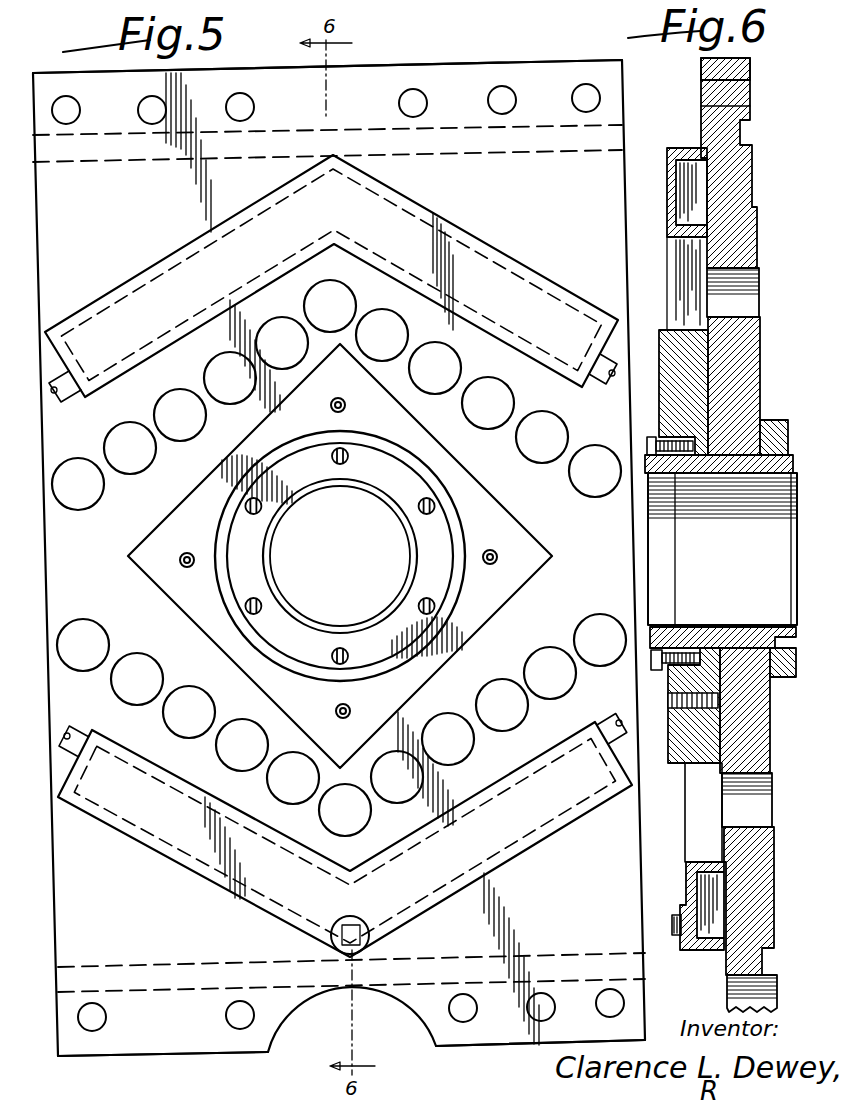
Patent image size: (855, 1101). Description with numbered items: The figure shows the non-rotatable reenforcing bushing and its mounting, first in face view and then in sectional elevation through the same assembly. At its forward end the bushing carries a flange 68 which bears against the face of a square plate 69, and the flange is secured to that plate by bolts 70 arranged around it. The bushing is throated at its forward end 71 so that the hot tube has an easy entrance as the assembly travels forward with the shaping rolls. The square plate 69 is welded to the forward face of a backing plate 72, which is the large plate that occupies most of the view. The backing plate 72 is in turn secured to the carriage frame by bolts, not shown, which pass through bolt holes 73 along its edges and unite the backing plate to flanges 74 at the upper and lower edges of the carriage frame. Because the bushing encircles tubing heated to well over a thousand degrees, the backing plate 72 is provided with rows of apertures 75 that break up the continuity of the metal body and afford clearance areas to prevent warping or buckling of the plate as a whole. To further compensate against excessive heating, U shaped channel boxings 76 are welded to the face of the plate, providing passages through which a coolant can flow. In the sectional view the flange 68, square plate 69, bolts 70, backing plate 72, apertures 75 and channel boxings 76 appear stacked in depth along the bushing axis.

In FIG. 5, the flange 68 is at (405, 485).
In FIG. 6, the flange 68 is at (655, 437).
In FIG. 5, the square plate 69 is at (418, 440).
In FIG. 6, the square plate 69 is at (670, 363).
In FIG. 5, the bolts 70 is at (434, 505).
In FIG. 6, the bolts 70 is at (660, 668).
In FIG. 5, the throated forward end 71 is at (316, 492).
In FIG. 6, the throated forward end 71 is at (745, 580).
In FIG. 5, the backing plate 72 is at (532, 211).
In FIG. 6, the backing plate 72 is at (730, 197).
In FIG. 5, the bolt holes 73 is at (143, 98).
In FIG. 5, the flanges 74 is at (385, 75).
In FIG. 6, the flanges 74 is at (702, 85).
In FIG. 5, the apertures 75 is at (428, 358).
In FIG. 6, the apertures 75 is at (745, 293).
In FIG. 5, the U shaped channel boxings 76 is at (400, 217).
In FIG. 6, the U shaped channel boxings 76 is at (673, 205).